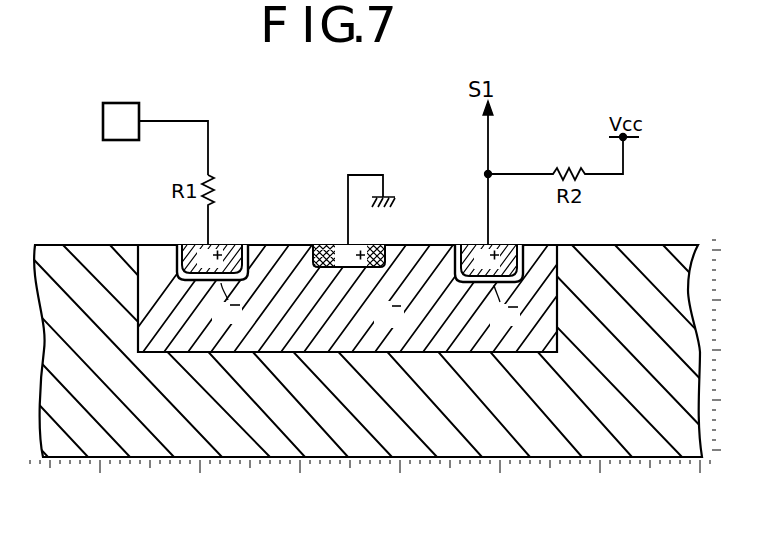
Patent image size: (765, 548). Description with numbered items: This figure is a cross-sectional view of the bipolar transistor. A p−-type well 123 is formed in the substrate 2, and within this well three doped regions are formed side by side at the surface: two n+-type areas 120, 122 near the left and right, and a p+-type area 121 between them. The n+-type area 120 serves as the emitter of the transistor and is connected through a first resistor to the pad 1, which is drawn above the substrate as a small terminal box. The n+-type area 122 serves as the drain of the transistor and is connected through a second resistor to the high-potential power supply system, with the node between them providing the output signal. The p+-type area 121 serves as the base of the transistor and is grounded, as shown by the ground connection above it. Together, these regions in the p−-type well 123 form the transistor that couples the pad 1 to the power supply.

The pad 1 is at (121, 103).
The substrate 2 is at (598, 446).
The n+-type area 120 is at (227, 245).
The p+-type area 121 is at (369, 245).
The n+-type area 122 is at (503, 245).
The p−-type well 123 is at (557, 298).